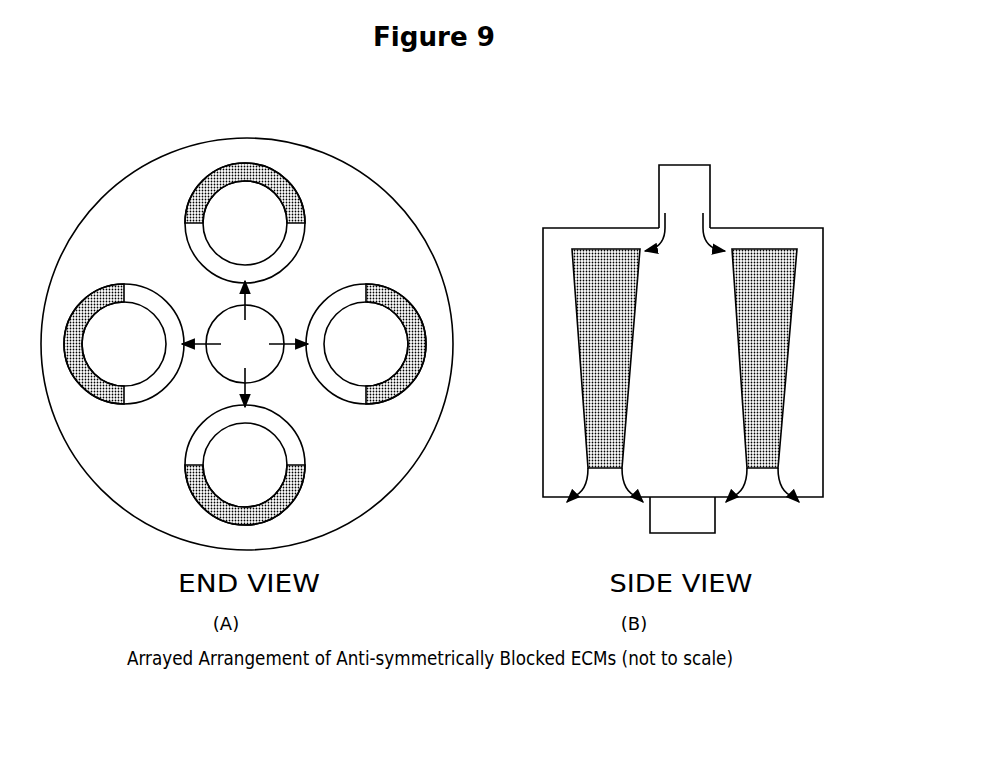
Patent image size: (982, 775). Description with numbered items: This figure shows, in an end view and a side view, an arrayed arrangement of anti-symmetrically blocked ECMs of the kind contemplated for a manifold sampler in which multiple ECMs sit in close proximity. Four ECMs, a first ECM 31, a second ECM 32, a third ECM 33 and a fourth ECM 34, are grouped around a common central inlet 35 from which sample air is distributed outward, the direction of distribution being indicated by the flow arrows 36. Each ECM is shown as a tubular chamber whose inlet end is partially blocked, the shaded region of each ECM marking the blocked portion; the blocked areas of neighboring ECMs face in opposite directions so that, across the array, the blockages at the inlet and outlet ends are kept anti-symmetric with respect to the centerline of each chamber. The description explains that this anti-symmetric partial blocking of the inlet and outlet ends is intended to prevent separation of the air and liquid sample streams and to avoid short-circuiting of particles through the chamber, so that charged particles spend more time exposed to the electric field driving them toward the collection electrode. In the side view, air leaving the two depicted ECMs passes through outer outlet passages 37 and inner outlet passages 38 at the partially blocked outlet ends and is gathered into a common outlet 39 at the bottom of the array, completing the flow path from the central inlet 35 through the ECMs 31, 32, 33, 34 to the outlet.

The first anti-symmetrically blocked ECM 31 is at (90, 393).
The second anti-symmetrically blocked ECM 32 is at (193, 492).
The third anti-symmetrically blocked ECM 33 is at (407, 298).
The fourth anti-symmetrically blocked ECM 34 is at (197, 195).
The central inlet tube 35 is at (272, 312).
The inlet flow arrows 36 is at (248, 389).
The outer outlet flow passages 37 is at (780, 487).
The inner outlet flow passages 38 is at (738, 483).
The outlet tube 39 is at (708, 518).